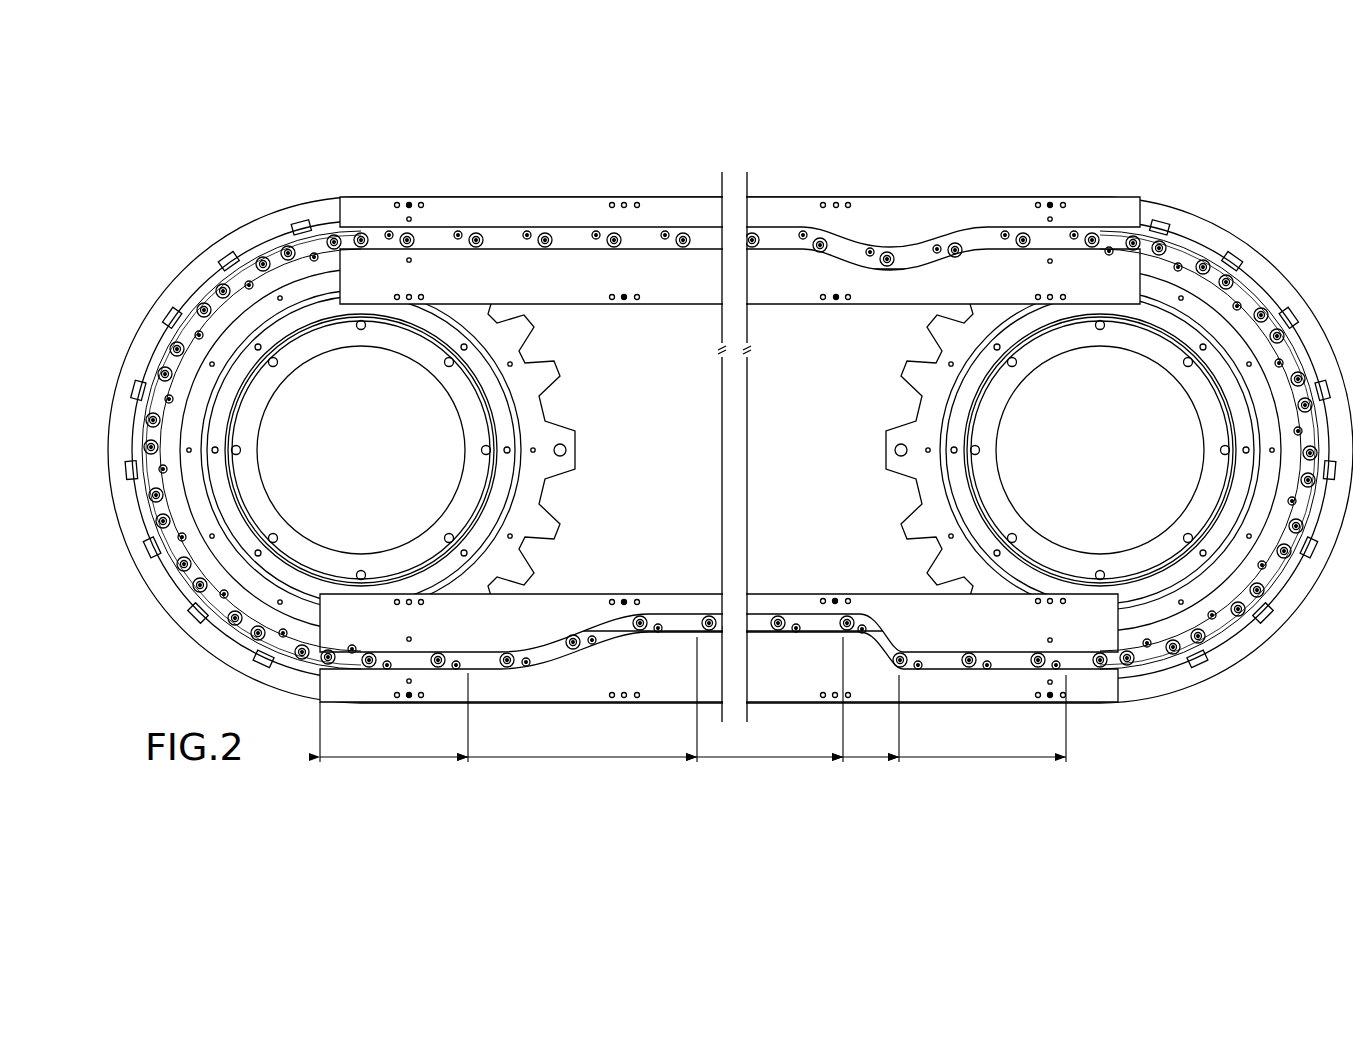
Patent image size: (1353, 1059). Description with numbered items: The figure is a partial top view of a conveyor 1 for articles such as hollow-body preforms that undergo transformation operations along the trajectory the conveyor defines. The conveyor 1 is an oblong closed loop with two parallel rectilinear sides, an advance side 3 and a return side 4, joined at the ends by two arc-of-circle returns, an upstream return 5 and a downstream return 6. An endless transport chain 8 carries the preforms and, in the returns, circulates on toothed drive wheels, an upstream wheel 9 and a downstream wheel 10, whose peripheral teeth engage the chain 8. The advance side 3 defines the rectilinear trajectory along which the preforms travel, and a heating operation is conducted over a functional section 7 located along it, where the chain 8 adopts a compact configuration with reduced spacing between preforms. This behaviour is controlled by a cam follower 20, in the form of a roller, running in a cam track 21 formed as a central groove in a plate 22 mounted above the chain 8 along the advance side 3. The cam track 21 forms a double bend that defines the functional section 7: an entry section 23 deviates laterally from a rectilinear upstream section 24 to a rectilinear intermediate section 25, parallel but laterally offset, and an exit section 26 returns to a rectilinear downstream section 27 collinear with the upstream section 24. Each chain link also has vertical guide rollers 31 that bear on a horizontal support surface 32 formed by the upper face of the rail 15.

The conveyor 1 is at (730, 443).
The advance side 3 is at (690, 719).
The return side 4 is at (340, 108).
The upstream return 5 is at (730, 451).
The downstream return 6 is at (730, 455).
The functional section 7 is at (694, 550).
The endless transport chain 8 is at (222, 283).
The upstream wheel 9 is at (550, 393).
The downstream wheel 10 is at (905, 387).
The rail 15 is at (730, 472).
The cam follower 20 is at (672, 617).
The cam track 21 is at (372, 650).
The plate 22 is at (690, 678).
The entry section 23 is at (582, 743).
The rectilinear upstream section 24 is at (394, 743).
The rectilinear intermediate section 25 is at (770, 743).
The exit section 26 is at (871, 743).
The rectilinear downstream section 27 is at (982, 743).
The vertical guide rollers 31 is at (1237, 637).
The horizontal support surface 32 is at (1208, 667).